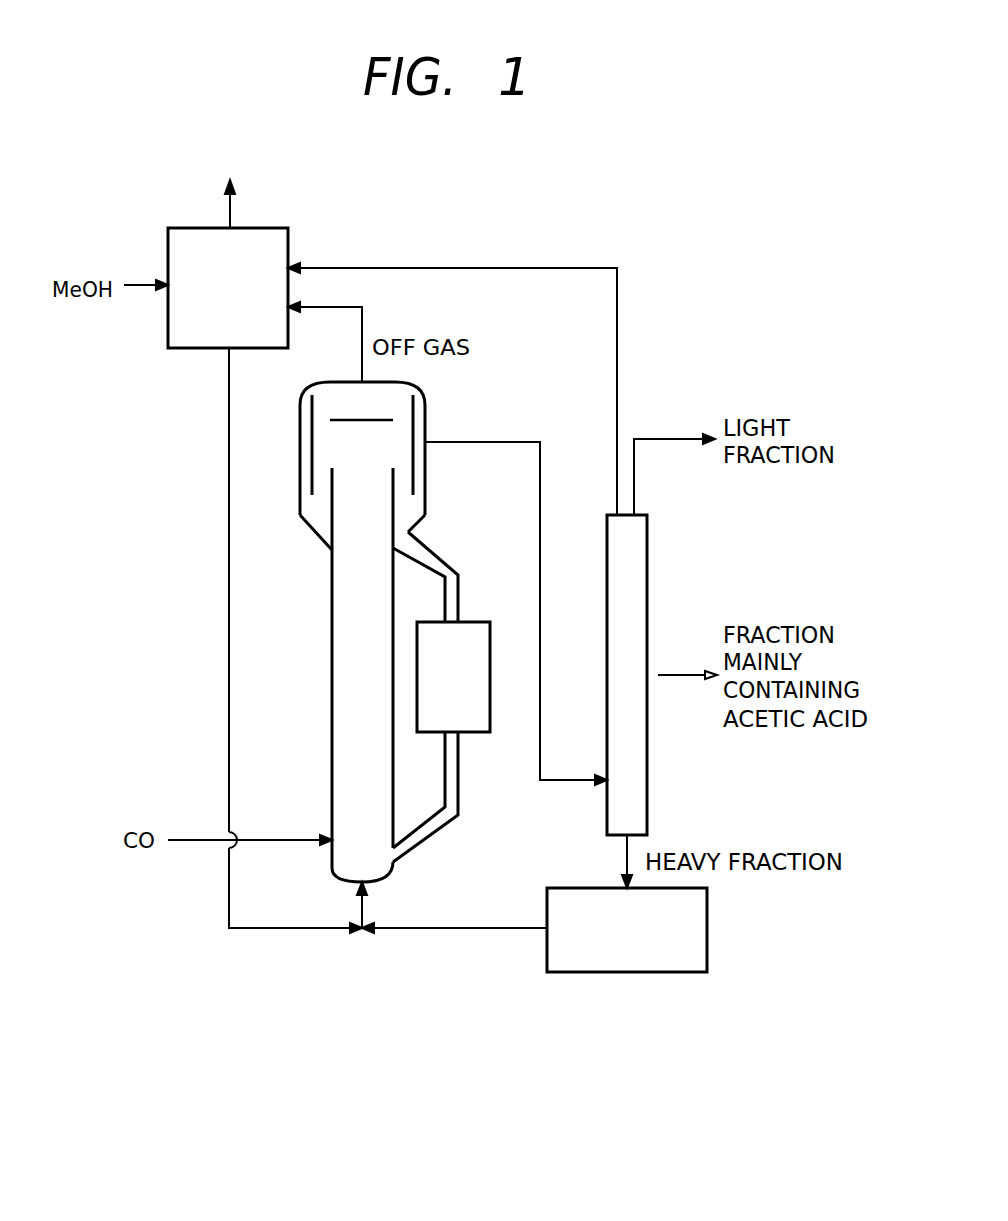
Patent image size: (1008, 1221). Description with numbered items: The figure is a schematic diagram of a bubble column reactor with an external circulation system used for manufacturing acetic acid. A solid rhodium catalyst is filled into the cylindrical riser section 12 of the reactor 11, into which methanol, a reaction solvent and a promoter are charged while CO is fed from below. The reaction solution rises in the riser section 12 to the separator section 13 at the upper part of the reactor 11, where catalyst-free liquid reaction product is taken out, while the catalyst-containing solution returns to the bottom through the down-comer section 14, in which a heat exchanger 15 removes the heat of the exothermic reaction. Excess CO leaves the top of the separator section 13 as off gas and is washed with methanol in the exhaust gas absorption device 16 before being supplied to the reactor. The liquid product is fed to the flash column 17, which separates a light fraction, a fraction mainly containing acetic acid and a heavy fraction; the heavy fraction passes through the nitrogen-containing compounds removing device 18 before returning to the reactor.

The reactor 11 is at (330, 632).
The cylindrical riser section 12 is at (340, 685).
The separator section 13 is at (307, 462).
The down-comer section 14 is at (443, 567).
The heat exchanger 15 is at (478, 620).
The exhaust gas absorption device 16 is at (288, 228).
The flash column 17 is at (647, 555).
The nitrogen-containing compounds removing device 18 is at (673, 972).